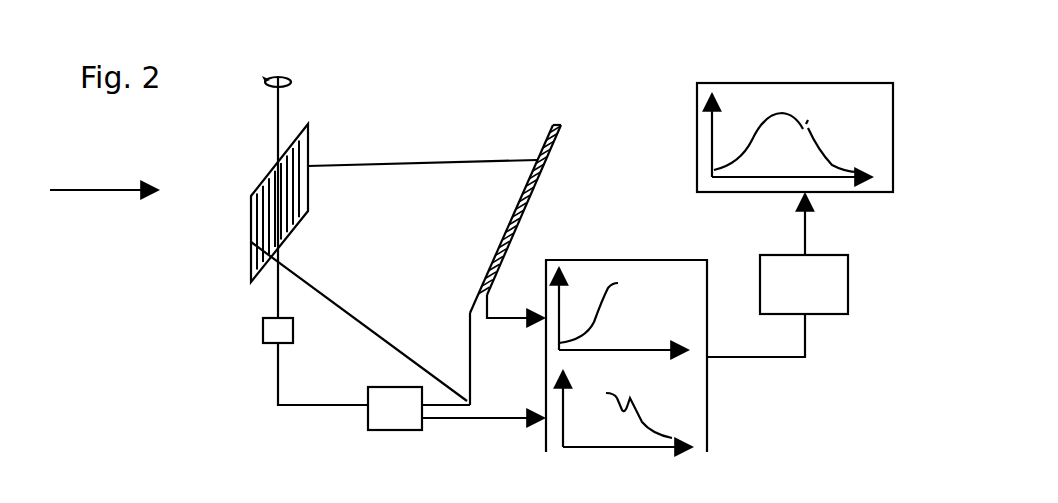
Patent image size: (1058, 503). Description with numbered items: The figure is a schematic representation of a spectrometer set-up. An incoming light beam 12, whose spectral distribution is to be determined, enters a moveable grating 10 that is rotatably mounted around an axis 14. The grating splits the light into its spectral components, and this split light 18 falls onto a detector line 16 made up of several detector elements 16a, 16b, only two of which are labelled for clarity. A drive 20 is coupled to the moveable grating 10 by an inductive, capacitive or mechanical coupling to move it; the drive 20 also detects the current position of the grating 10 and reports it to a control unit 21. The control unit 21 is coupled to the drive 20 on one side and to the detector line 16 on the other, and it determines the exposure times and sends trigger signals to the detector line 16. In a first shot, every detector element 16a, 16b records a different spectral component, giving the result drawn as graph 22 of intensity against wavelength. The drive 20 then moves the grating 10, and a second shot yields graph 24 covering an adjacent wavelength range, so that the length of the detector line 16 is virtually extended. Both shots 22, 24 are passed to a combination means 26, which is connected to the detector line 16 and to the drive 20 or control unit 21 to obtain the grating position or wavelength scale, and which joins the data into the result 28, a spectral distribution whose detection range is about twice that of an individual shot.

The moveable grating 10 is at (297, 124).
The light beam 12 is at (105, 190).
The axis 14 is at (283, 100).
The detector line 16 is at (554, 225).
The detector element 16a is at (517, 230).
The detector element 16b is at (530, 217).
The light split into its spectral components 18 is at (428, 150).
The drive 20 is at (293, 327).
The control unit 21 is at (410, 430).
The first shot 22 is at (642, 300).
The second shot 24 is at (670, 402).
The combination means 26 is at (850, 290).
The result 28 is at (828, 118).